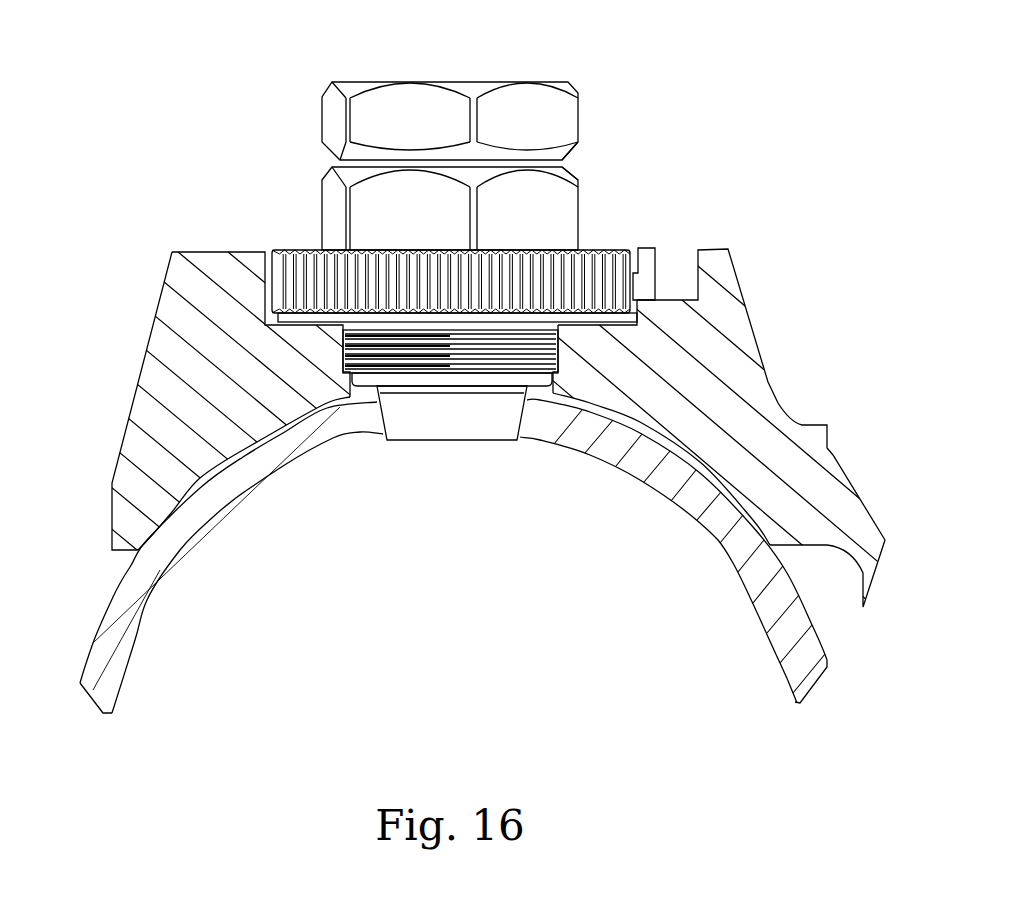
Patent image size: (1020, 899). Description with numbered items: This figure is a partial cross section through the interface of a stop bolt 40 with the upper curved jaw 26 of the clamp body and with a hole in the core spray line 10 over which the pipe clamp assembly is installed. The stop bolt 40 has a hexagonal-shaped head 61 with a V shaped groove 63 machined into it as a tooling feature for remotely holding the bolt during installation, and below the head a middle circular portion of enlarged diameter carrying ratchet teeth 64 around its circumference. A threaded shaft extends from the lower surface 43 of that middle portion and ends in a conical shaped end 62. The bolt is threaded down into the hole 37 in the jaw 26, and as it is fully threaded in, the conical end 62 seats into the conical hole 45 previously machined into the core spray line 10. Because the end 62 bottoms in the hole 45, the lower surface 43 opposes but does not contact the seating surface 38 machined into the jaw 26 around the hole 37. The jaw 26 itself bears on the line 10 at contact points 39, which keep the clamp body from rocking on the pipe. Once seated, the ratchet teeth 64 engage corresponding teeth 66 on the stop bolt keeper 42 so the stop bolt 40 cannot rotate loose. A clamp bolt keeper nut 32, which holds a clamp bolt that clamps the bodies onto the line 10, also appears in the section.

The core spray line 10 is at (117, 647).
The upper curved jaw 26 is at (180, 277).
The clamp bolt keeper nut 32 is at (566, 211).
The hole 37 is at (345, 400).
The seating surface 38 is at (240, 362).
The contact point 39 is at (147, 542).
The stop bolt 40 is at (418, 106).
The stop bolt keeper 42 is at (682, 273).
The lower surface 43 is at (307, 328).
The conical hole 45 is at (536, 440).
The hexagonal-shaped head 61 is at (546, 114).
The conical shaped end 62 is at (455, 433).
The V shaped groove 63 is at (548, 158).
The ratchet teeth 64 is at (308, 272).
The teeth 66 is at (640, 284).